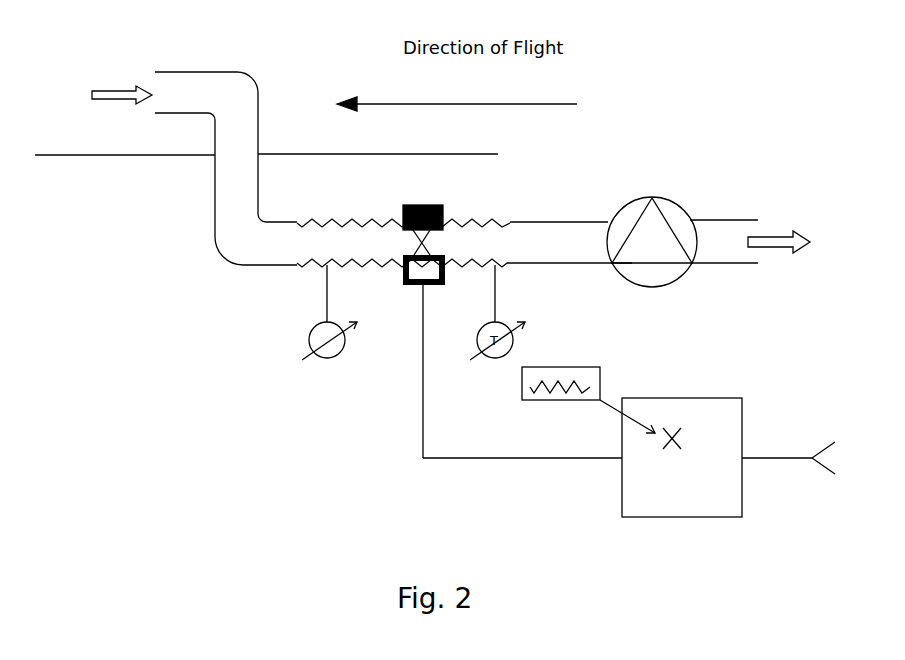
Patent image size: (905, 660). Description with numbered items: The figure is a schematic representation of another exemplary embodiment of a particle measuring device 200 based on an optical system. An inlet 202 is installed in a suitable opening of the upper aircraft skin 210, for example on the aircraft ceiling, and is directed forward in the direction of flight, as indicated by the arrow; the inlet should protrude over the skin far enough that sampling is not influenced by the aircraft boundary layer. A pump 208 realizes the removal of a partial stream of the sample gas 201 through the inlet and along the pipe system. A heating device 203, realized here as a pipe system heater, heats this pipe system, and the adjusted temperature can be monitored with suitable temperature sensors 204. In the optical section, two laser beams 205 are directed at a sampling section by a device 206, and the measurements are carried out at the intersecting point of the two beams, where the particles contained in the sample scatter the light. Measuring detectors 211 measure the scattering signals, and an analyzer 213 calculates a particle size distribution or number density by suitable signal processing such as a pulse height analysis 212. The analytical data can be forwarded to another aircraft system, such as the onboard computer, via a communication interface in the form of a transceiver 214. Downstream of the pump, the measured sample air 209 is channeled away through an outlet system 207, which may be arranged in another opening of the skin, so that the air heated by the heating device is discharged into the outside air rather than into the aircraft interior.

The measuring device 200 is at (200, 348).
The sample gas 201 is at (100, 90).
The inlet 202 is at (183, 92).
The heating device 203 is at (338, 221).
The temperature sensors 204 is at (318, 360).
The laser beams 205 is at (420, 233).
The device 206 is at (424, 206).
The outlet system 207 is at (742, 219).
The pump 208 is at (674, 210).
The measured sample air 209 is at (774, 246).
The upper aircraft skin 210 is at (103, 155).
The measuring detectors 211 is at (416, 287).
The pulse height analysis 212 is at (577, 367).
The analyzer 213 is at (678, 502).
The transceiver 214 is at (818, 466).